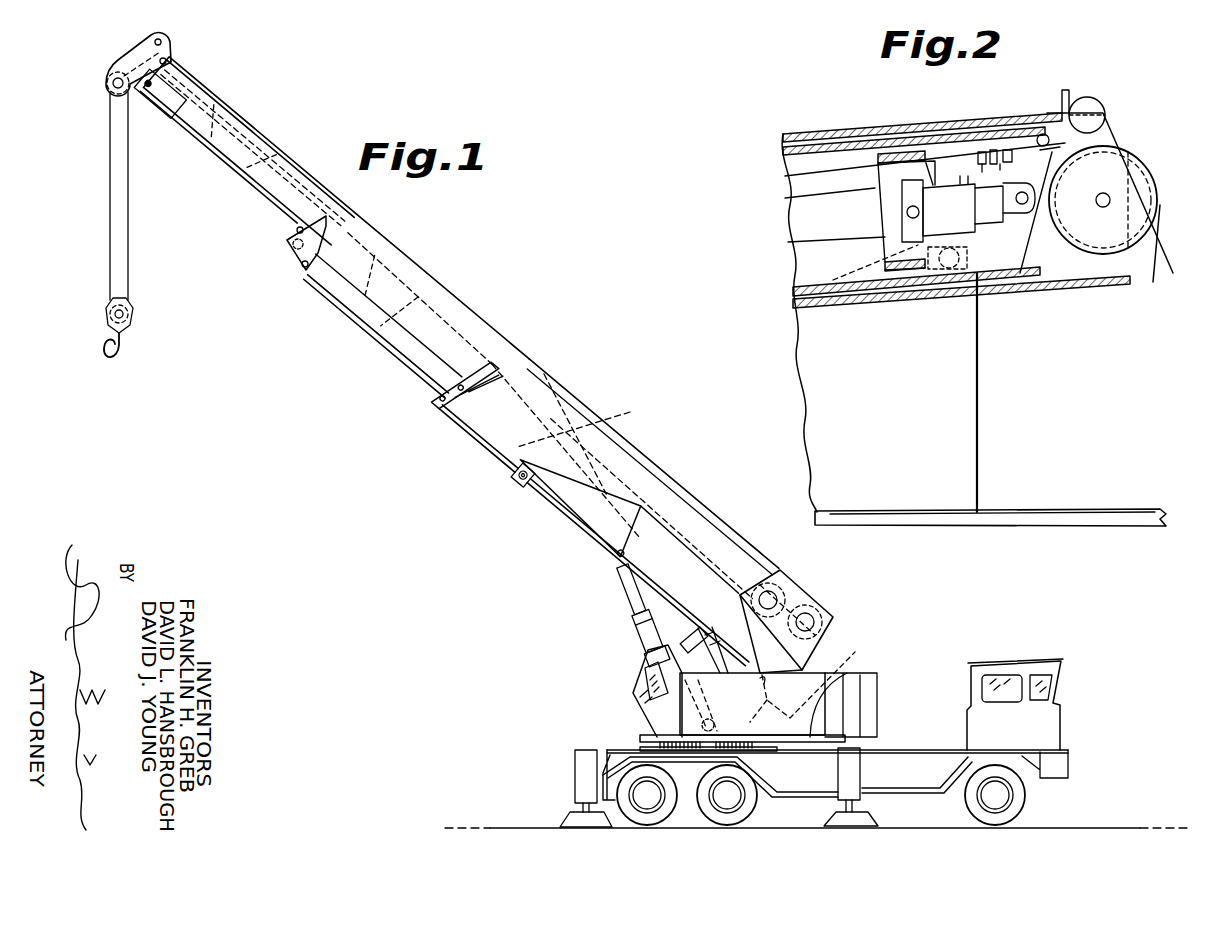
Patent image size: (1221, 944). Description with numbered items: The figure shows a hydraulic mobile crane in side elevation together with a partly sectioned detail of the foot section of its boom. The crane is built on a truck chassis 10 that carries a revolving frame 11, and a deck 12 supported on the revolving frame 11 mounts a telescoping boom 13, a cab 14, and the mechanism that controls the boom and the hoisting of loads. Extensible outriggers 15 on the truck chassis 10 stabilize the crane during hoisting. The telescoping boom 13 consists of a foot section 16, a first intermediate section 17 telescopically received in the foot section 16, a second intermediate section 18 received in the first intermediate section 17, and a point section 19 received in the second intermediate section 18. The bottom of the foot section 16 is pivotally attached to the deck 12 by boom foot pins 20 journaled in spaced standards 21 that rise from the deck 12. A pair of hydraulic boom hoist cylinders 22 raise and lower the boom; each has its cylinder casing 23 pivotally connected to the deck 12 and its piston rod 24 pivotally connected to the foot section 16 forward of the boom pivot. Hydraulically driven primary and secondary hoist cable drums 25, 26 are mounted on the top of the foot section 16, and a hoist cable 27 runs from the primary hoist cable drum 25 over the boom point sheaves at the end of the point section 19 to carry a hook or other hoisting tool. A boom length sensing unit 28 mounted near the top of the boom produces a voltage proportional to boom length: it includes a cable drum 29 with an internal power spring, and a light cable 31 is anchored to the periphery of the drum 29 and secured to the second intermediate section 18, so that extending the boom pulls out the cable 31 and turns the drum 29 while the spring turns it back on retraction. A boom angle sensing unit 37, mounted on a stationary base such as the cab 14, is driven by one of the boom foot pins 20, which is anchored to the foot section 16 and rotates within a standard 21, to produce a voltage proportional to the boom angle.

In FIG. 1, the truck chassis 10 is at (1070, 758).
In FIG. 1, the revolving frame 11 is at (658, 739).
In FIG. 2, the revolving frame 11 is at (1115, 522).
In FIG. 1, the deck 12 is at (822, 690).
In FIG. 2, the deck 12 is at (1073, 512).
In FIG. 1, the telescoping boom 13 is at (550, 408).
In FIG. 2, the telescoping boom 13 is at (952, 118).
In FIG. 1, the cab 14 is at (638, 681).
In FIG. 1, the extensible outriggers 15 is at (580, 787).
In FIG. 1, the foot section 16 is at (684, 526).
In FIG. 2, the foot section 16 is at (1058, 287).
In FIG. 1, the first intermediate section 17 is at (430, 304).
In FIG. 2, the first intermediate section 17 is at (814, 143).
In FIG. 1, the second intermediate section 18 is at (287, 172).
In FIG. 2, the second intermediate section 18 is at (905, 152).
In FIG. 1, the point section 19 is at (168, 66).
In FIG. 1, the boom foot pins 20 is at (737, 719).
In FIG. 2, the boom foot pins 20 is at (975, 259).
In FIG. 2, the standards 21 is at (980, 417).
In FIG. 1, the hydraulic boom hoist cylinders 22 is at (638, 632).
In FIG. 1, the cylinder casings 23 is at (652, 647).
In FIG. 1, the piston rods 24 is at (632, 590).
In FIG. 1, the primary hoist cable drum 25 is at (825, 612).
In FIG. 1, the secondary hoist cable drum 26 is at (788, 600).
In FIG. 1, the hoist cable 27 is at (654, 476).
In FIG. 1, the boom length sensing unit 28 is at (822, 650).
In FIG. 2, the boom length sensing unit 28 is at (1090, 94).
In FIG. 2, the cable drum 29 is at (1094, 108).
In FIG. 1, the light cable 31 is at (590, 420).
In FIG. 2, the light cable 31 is at (1092, 140).
In FIG. 2, the boom angle sensing unit 37 is at (922, 272).